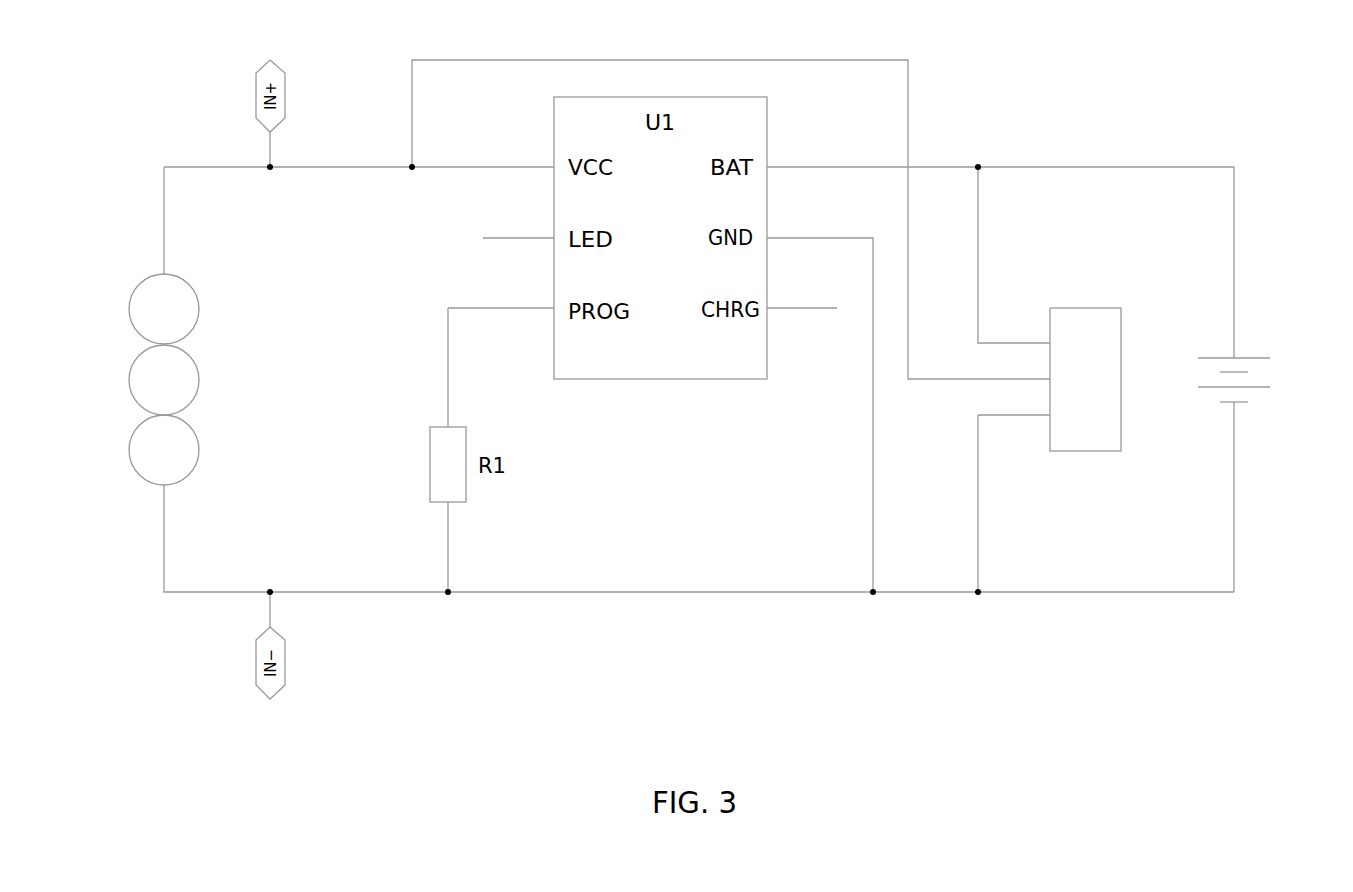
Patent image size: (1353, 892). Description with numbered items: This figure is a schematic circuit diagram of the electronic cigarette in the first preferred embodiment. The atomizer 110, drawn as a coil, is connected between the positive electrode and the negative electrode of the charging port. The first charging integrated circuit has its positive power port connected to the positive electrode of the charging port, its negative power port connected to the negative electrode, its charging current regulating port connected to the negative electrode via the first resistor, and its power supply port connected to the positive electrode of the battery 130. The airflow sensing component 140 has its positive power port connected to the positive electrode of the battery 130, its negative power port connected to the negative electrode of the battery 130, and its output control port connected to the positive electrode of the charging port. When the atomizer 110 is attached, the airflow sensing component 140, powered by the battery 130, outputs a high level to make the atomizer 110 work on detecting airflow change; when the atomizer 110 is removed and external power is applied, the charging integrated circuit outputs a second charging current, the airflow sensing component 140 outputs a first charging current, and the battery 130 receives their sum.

The atomizer 110 is at (140, 282).
The battery 130 is at (1253, 410).
The airflow sensing component 140 is at (1084, 307).